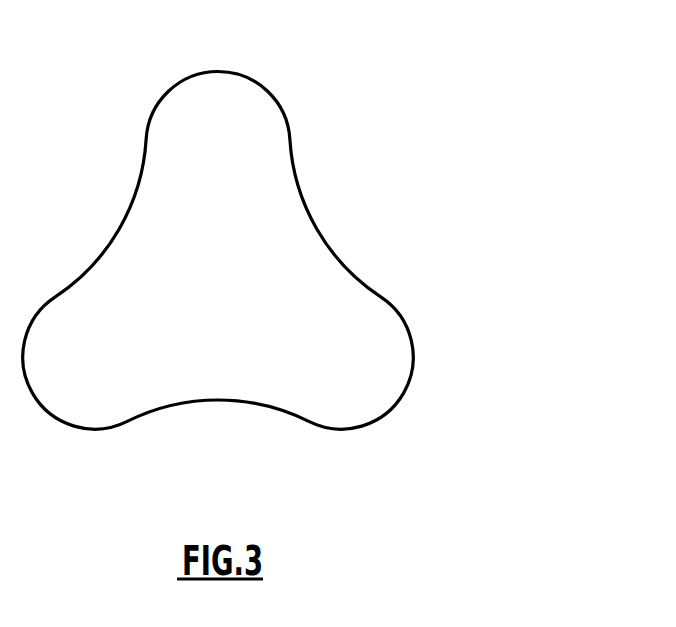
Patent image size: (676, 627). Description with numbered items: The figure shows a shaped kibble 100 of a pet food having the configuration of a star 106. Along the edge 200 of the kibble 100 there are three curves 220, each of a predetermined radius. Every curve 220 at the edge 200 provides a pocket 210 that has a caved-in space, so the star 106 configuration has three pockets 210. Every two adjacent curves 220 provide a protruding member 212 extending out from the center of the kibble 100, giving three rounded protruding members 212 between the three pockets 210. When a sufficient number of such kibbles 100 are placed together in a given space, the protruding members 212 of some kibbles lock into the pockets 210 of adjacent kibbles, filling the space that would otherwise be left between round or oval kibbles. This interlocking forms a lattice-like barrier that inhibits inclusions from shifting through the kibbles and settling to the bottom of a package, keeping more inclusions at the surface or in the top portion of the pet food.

The shaped kibble 100 is at (478, 195).
The star 106 is at (241, 470).
The edge 200 is at (290, 127).
The pocket 210 is at (90, 221).
The protruding member 212 is at (225, 95).
The curve 220 is at (385, 296).